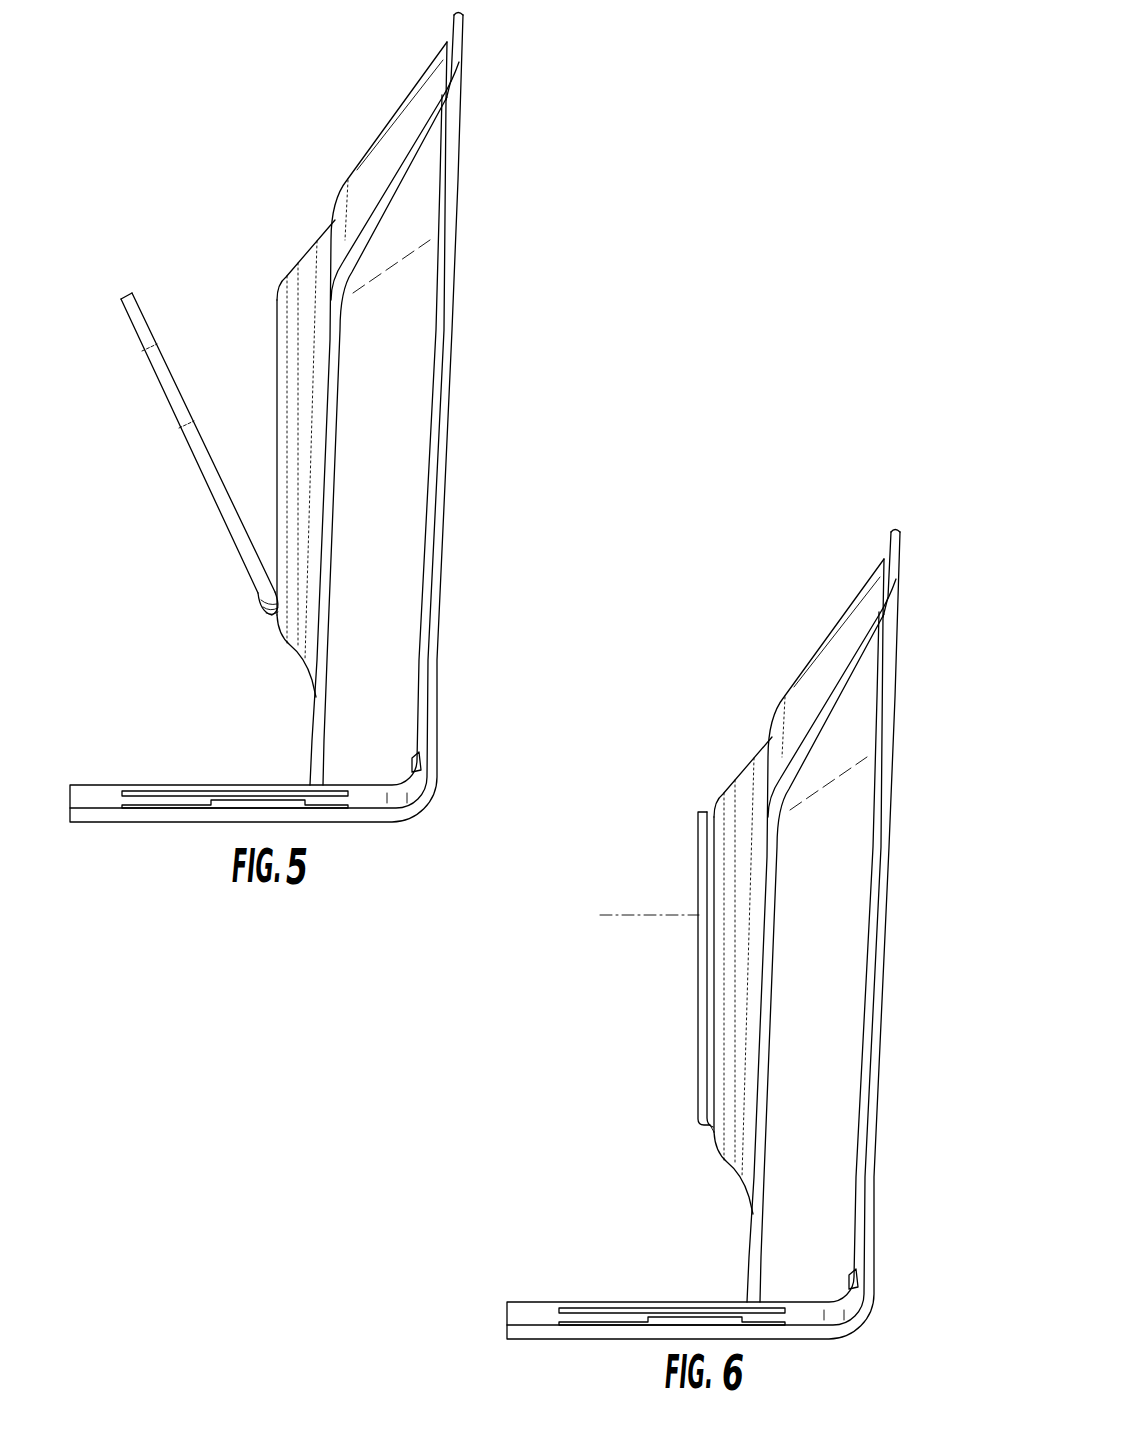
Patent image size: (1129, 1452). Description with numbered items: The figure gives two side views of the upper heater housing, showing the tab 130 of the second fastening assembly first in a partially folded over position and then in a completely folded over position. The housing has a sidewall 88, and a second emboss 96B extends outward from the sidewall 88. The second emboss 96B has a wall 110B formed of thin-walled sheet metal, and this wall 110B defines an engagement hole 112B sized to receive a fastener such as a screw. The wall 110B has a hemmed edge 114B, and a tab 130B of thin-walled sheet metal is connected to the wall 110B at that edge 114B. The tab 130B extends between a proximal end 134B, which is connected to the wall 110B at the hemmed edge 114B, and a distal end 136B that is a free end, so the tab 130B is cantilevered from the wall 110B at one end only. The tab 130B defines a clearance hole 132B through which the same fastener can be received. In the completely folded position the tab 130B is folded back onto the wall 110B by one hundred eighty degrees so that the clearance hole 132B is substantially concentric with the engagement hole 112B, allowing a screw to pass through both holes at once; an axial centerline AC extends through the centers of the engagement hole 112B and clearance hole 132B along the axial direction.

In FIG. 5, the sidewall 88 is at (458, 152).
In FIG. 6, the sidewall 88 is at (888, 668).
In FIG. 5, the second emboss 96B is at (310, 243).
In FIG. 6, the second emboss 96B is at (758, 747).
In FIG. 5, the wall 110B is at (275, 302).
In FIG. 6, the wall 110B is at (712, 806).
In FIG. 5, the engagement hole 112B is at (275, 376).
In FIG. 5, the hemmed edge 114B is at (267, 617).
In FIG. 5, the tab 130B is at (208, 493).
In FIG. 5, the clearance hole 132B is at (178, 407).
In FIG. 5, the proximal end 134B is at (257, 630).
In FIG. 6, the proximal end 134B is at (695, 1140).
In FIG. 5, the distal end 136B is at (113, 295).
In FIG. 6, the distal end 136B is at (695, 816).
In FIG. 6, the tab 130 is at (699, 1033).
In FIG. 6, the axial centerline AC is at (649, 900).